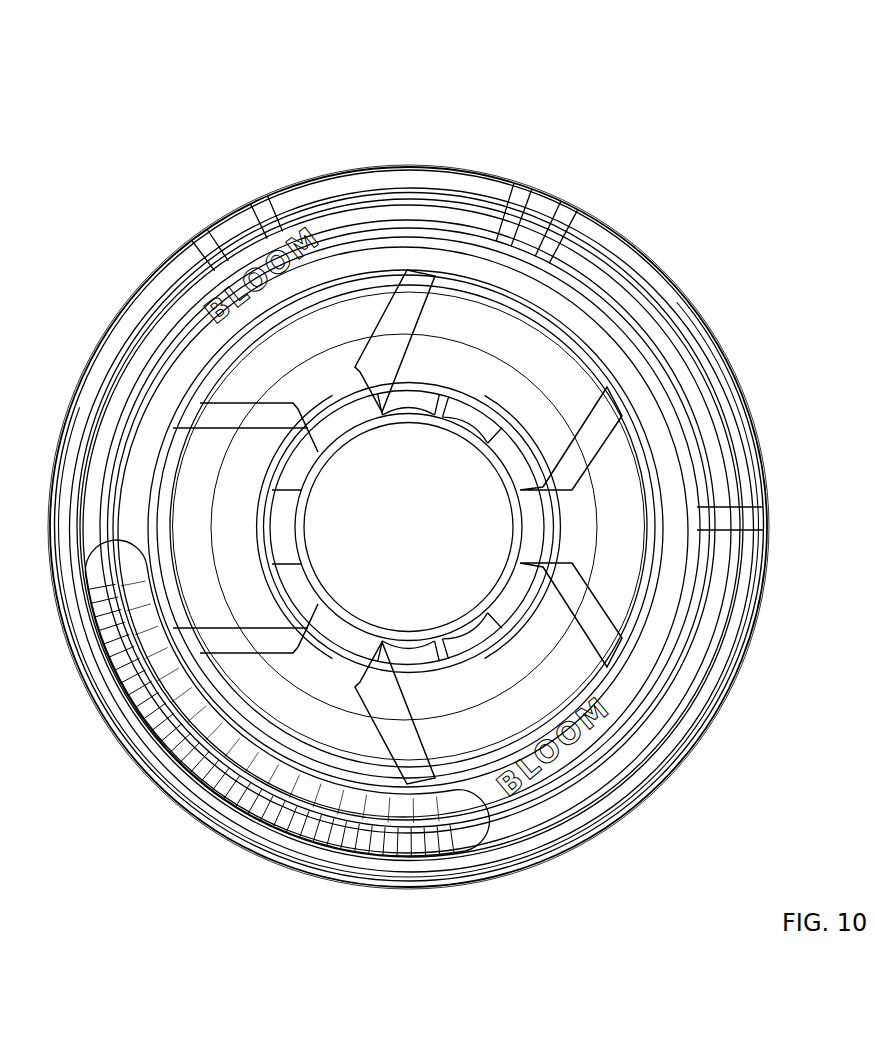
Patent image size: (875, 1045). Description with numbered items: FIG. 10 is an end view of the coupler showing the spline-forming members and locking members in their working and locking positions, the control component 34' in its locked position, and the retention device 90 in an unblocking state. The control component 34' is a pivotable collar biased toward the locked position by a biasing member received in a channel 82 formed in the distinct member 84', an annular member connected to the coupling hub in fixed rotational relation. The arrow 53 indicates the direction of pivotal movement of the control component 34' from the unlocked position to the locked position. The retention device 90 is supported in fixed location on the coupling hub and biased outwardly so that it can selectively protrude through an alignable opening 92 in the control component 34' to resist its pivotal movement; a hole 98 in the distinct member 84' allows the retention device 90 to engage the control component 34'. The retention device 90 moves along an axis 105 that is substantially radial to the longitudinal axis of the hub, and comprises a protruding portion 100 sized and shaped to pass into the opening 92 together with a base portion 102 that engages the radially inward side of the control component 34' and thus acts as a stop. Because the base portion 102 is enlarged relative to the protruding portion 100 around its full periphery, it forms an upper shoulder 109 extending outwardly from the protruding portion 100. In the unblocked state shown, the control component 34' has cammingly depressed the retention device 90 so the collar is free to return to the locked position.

The reverse direction 53 is at (412, 48).
The alignable opening 92 is at (273, 186).
The control component 34' is at (408, 492).
The retention device 90 is at (569, 217).
The axis of movement 105 is at (610, 188).
The protruding portion 100 is at (568, 260).
The upper shoulder 109 is at (587, 277).
The hole 98 is at (627, 298).
The distinct member 84' is at (447, 526).
The base portion 102 is at (598, 322).
The channel 82 is at (413, 845).